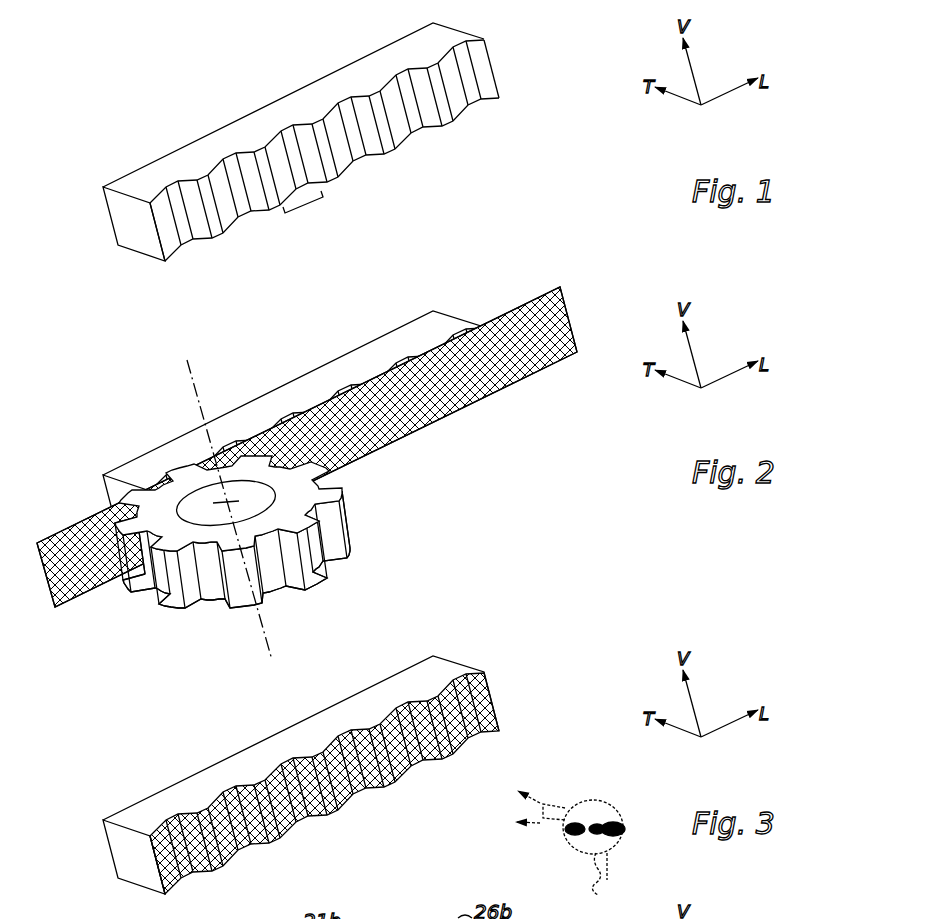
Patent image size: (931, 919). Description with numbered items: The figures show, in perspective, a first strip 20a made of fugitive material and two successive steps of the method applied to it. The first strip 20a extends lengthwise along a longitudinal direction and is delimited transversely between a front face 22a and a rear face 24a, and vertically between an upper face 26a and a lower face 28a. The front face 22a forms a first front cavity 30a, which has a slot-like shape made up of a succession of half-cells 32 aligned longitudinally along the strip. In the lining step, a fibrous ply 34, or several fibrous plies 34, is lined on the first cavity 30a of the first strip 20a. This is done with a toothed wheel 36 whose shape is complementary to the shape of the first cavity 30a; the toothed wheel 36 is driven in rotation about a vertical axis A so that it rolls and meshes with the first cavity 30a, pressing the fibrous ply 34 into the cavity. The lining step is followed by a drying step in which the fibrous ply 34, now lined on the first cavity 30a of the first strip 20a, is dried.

In FIG. 1, the first strip 20a is at (523, 44).
In FIG. 2, the first strip 20a is at (480, 303).
In FIG. 3, the first strip 20a is at (510, 676).
In FIG. 1, the front face 22a is at (487, 83).
In FIG. 1, the rear face 24a is at (242, 116).
In FIG. 1, the upper face 26a is at (133, 187).
In FIG. 1, the lower face 28a is at (182, 250).
In FIG. 1, the first front cavity 30a is at (447, 97).
In FIG. 2, the first front cavity 30a is at (350, 390).
In FIG. 3, the first front cavity 30a is at (385, 710).
In FIG. 1, the half-cells 32 is at (303, 207).
In FIG. 2, the fibrous ply 34 is at (545, 370).
In FIG. 3, the fibrous ply 34 is at (195, 878).
In FIG. 2, the toothed wheel 36 is at (318, 593).
In FIG. 2, the vertical axis A is at (187, 370).